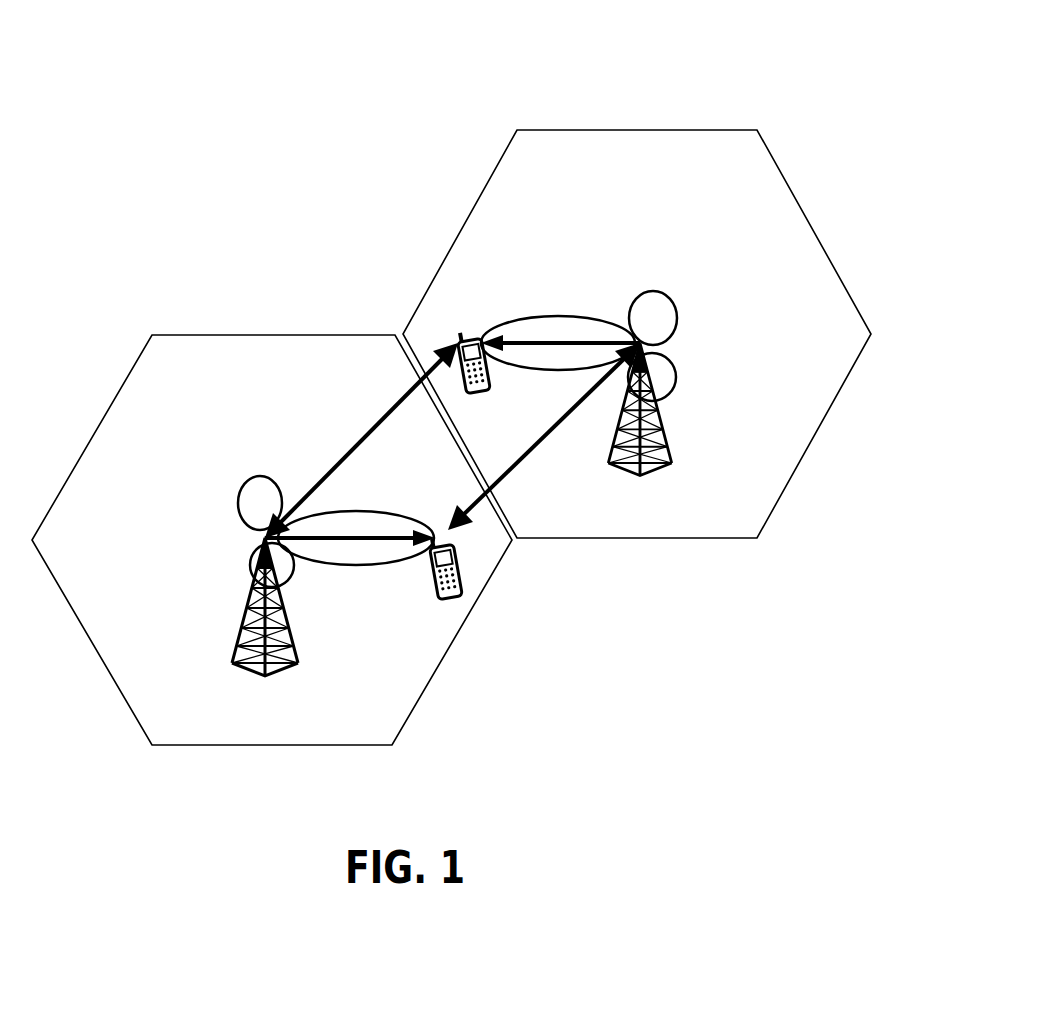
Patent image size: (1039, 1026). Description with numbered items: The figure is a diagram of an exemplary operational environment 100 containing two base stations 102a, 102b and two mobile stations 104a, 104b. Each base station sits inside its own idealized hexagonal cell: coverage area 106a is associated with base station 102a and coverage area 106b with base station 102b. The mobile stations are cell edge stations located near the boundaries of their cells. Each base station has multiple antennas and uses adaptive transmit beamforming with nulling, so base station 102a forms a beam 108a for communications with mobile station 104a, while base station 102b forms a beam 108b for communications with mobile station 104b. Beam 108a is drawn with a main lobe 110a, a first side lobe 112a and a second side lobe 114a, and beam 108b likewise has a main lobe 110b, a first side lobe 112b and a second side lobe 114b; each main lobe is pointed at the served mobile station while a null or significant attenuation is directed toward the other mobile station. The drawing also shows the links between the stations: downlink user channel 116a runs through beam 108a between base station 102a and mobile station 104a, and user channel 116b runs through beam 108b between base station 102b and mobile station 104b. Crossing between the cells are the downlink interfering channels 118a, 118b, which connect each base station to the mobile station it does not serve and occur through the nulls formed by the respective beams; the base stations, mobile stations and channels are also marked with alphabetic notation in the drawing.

The operational environment 100 is at (965, 58).
The base station 102a is at (235, 560).
The base station 102b is at (677, 372).
The mobile station 104a is at (462, 598).
The mobile station 104b is at (478, 343).
The coverage area 106a is at (284, 335).
The coverage area 106b is at (672, 130).
The beam 108a is at (366, 590).
The beam 108b is at (561, 284).
The main lobe 110a is at (333, 512).
The main lobe 110b is at (580, 317).
The first side lobe 112a is at (252, 580).
The first side lobe 112b is at (669, 300).
The second side lobe 114a is at (245, 486).
The second side lobe 114b is at (674, 389).
The downlink user channel 116a is at (353, 541).
The downlink user channel 116b is at (555, 346).
The downlink interfering channel 118a is at (397, 404).
The downlink interfering channel 118b is at (542, 440).